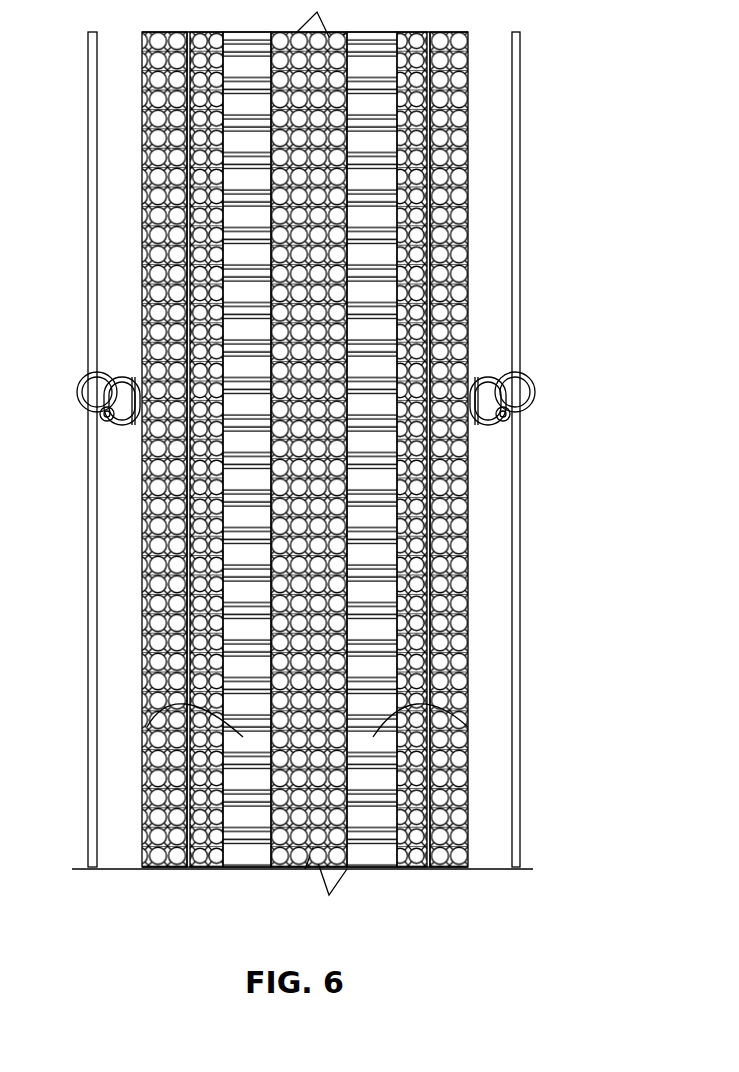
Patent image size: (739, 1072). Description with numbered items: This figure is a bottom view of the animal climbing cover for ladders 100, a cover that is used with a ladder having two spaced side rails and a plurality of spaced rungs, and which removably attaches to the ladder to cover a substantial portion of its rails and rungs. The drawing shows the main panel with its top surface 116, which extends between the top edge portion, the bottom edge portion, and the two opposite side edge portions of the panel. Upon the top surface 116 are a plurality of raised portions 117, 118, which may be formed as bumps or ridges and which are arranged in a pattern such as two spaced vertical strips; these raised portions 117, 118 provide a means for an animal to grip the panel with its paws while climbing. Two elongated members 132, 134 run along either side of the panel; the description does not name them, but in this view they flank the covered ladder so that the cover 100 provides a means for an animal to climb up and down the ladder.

The animal climbing cover for ladders 100 is at (573, 113).
The top surface 116 is at (403, 268).
The raised portion 117 is at (467, 585).
The raised portion 118 is at (147, 727).
The left support rail 132 is at (88, 463).
The right support rail 134 is at (523, 460).